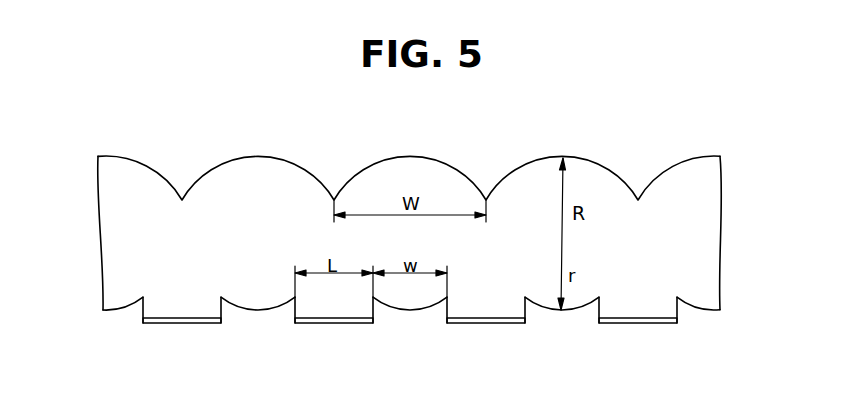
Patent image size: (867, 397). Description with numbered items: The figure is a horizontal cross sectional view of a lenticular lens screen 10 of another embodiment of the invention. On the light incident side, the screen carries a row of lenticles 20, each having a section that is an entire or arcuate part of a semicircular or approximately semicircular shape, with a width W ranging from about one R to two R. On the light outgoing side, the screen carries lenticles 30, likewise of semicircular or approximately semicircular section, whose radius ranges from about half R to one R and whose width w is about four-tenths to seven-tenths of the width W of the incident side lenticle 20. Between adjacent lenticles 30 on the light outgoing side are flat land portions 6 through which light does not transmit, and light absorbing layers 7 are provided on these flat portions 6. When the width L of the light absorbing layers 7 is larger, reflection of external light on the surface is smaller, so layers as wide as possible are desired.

The lenticular lens screen 10 is at (148, 268).
The lenticle on the light incident side 20 is at (257, 156).
The lenticle on the light outgoing side 30 is at (263, 312).
The flat land portion 6 is at (493, 296).
The light absorbing layer 7 is at (469, 323).